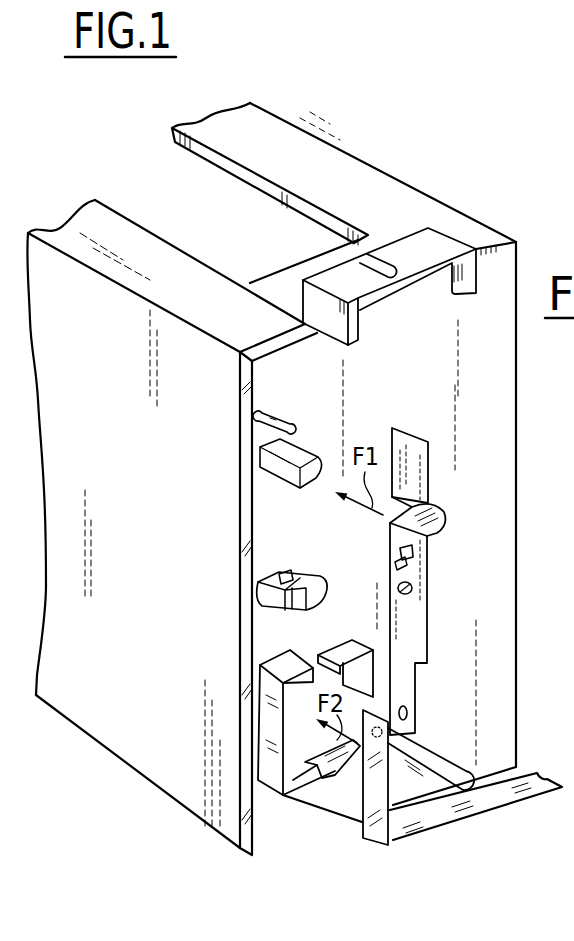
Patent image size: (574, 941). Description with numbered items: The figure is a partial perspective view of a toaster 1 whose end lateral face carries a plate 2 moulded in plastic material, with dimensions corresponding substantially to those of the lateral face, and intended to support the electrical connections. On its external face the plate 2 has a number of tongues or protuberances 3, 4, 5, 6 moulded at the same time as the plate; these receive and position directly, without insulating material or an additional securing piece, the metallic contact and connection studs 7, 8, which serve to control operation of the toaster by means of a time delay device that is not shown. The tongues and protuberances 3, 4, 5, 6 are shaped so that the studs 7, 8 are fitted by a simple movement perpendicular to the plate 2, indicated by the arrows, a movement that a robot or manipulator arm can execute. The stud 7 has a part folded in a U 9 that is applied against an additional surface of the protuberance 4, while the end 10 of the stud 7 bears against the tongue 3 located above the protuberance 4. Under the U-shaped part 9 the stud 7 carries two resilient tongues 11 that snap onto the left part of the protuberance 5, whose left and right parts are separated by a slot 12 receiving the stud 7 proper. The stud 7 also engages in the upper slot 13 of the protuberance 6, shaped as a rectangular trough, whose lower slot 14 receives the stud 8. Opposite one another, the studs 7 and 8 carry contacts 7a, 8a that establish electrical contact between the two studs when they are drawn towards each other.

The toaster 1 is at (122, 697).
The plate 2 is at (495, 427).
The tongue 3 is at (277, 418).
The protuberance 4 is at (297, 461).
The protuberance 5 is at (297, 576).
The protuberance 6 is at (349, 647).
The stud 7 is at (413, 630).
The contact 7a is at (408, 712).
The stud 8 is at (396, 822).
The contact 8a is at (385, 748).
The part folded in a U 9 is at (442, 506).
The end 10 is at (407, 445).
The resilient tongues 11 is at (397, 554).
The slot 12 is at (282, 572).
The upper slot 13 is at (318, 656).
The lower slot 14 is at (328, 780).